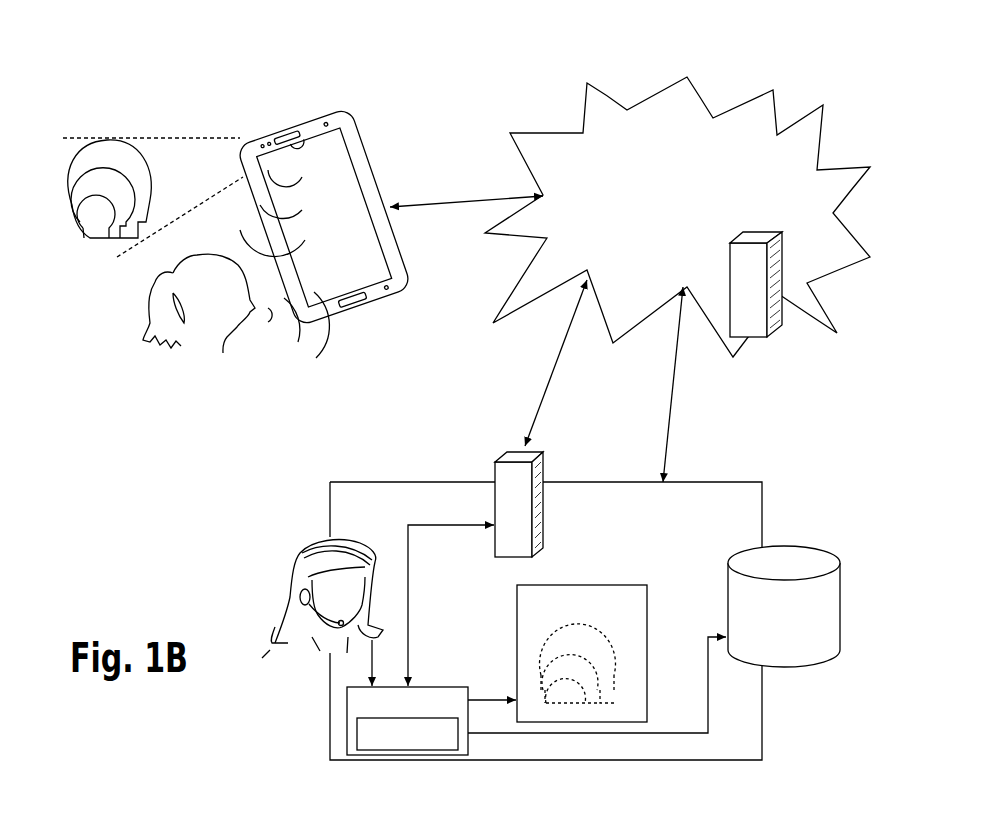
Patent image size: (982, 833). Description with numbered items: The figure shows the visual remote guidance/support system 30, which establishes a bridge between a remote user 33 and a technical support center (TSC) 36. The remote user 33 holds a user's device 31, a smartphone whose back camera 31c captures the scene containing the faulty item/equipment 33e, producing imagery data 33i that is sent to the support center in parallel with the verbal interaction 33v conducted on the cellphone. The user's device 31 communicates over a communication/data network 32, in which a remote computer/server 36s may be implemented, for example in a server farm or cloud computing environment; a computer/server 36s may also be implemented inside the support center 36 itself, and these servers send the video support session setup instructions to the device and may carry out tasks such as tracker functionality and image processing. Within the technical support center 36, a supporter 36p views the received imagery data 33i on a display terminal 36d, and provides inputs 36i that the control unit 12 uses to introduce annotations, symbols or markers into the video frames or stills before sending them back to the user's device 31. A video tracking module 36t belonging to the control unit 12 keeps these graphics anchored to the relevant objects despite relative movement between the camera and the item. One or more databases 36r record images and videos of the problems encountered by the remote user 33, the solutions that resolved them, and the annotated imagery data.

The visual remote guidance/support system 30 is at (106, 453).
The user's device 31 is at (373, 175).
The back camera 31c is at (253, 121).
The network 32 is at (817, 105).
The remote user 33 is at (150, 297).
The faulty item/equipment 33e is at (90, 237).
The imagery data 33i is at (187, 153).
The verbal interaction 33v is at (283, 347).
The technical support center (TSC) 36 is at (330, 498).
The remote computer/server 36s is at (730, 277).
The supporter 36p is at (284, 590).
The inputs from the supporter 36i is at (372, 663).
The video tracking module 36t is at (357, 740).
The display terminal 36d is at (647, 640).
The database 36r is at (827, 548).
The control unit 12 is at (420, 687).